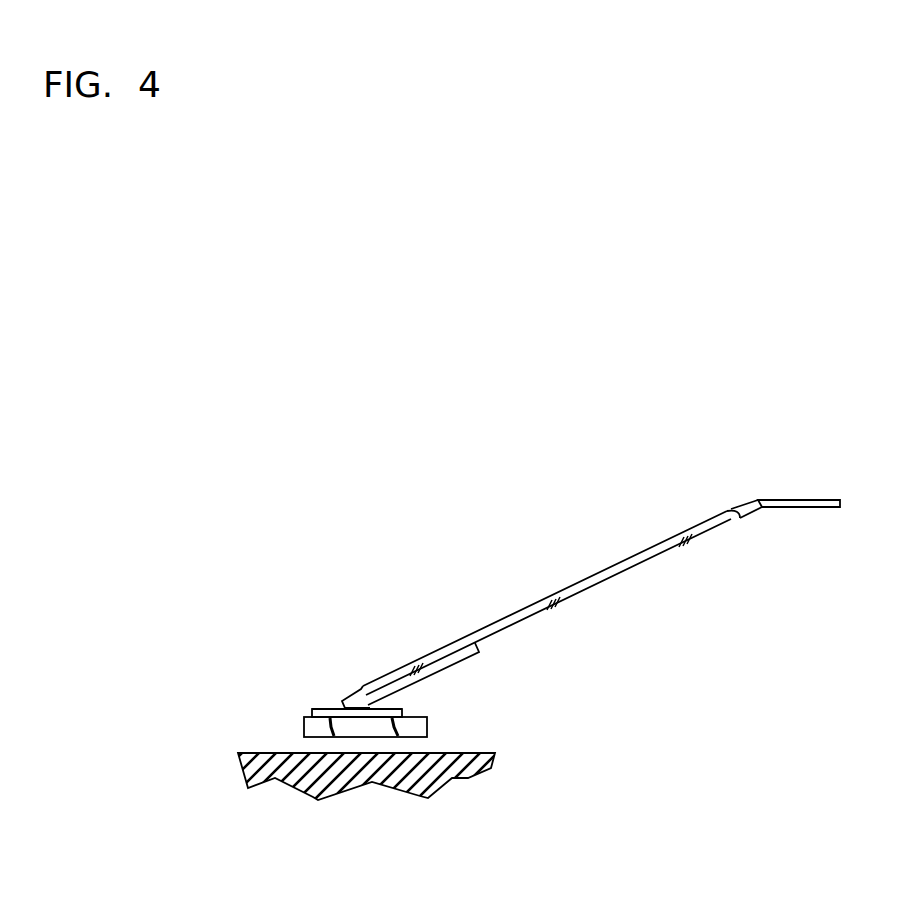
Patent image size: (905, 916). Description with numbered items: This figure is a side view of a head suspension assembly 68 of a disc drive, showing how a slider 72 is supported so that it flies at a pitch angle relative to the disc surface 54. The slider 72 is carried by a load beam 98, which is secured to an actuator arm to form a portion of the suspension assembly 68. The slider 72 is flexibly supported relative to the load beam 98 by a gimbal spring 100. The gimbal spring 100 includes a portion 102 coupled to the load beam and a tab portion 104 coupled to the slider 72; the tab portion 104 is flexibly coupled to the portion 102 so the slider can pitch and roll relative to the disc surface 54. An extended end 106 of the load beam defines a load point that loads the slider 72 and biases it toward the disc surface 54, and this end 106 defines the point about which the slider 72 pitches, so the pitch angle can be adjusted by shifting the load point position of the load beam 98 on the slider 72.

The suspension assembly 68 is at (606, 448).
The load beam 98 is at (522, 612).
The portion 102 is at (474, 652).
The extended end 106 is at (347, 697).
The gimbal spring 100 is at (430, 690).
The tab portion 104 is at (401, 710).
The slider 72 is at (415, 726).
The disc surface 54 is at (538, 759).